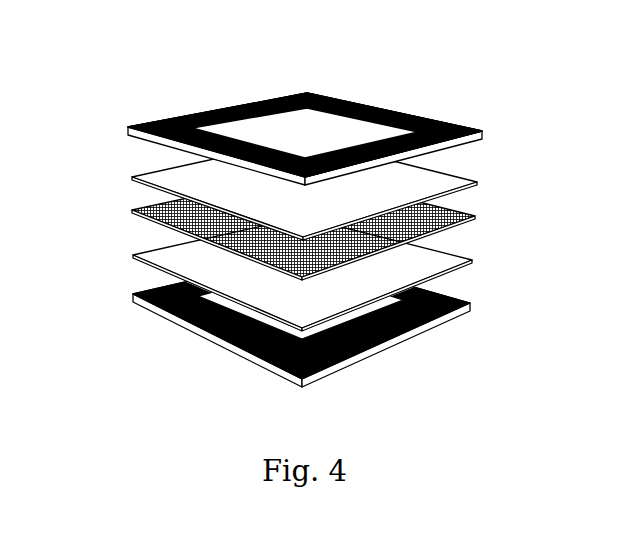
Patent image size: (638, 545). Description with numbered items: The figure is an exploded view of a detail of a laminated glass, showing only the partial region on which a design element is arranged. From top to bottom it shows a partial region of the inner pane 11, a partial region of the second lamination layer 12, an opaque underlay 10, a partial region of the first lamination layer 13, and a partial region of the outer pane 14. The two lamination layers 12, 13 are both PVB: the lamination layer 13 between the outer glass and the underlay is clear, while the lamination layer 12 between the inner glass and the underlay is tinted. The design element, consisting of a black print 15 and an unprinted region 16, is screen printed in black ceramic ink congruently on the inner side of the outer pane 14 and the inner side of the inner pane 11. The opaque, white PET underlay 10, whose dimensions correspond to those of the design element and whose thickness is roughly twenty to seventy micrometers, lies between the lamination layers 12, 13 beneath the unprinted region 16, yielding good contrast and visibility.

The opaque underlay 10 is at (475, 216).
The partial region of the inner pane 11 is at (482, 132).
The partial region of the second lamination layer 12 is at (477, 183).
The partial region of the first lamination layer 13 is at (472, 260).
The partial region of the outer pane 14 is at (470, 305).
The black print 15 is at (170, 128).
The unprinted region 16 is at (293, 127).